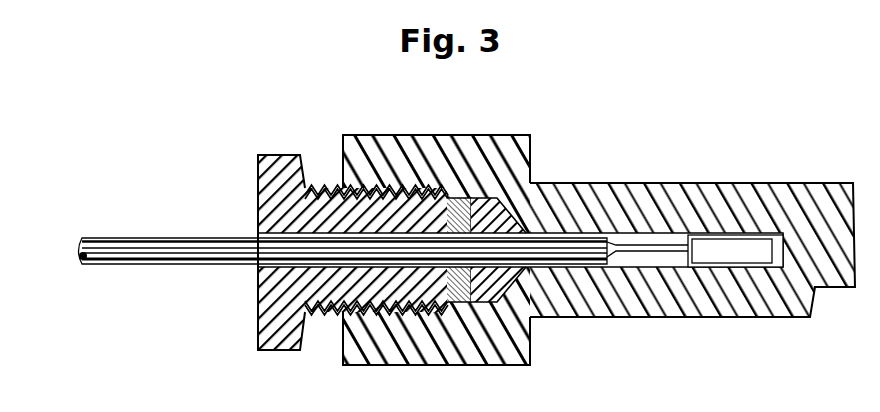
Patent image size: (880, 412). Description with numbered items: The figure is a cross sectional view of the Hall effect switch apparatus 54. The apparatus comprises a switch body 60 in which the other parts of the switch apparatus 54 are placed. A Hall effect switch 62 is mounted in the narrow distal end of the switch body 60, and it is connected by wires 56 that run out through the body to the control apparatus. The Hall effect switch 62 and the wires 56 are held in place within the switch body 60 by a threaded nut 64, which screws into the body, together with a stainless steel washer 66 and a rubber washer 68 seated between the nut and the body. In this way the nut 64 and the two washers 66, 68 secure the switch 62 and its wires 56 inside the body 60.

The Hall effect switch apparatus 54 is at (637, 183).
The wires 56 is at (137, 243).
The switch body 60 is at (673, 310).
The Hall effect switch 62 is at (777, 268).
The threaded nut 64 is at (275, 160).
The stainless steel washer 66 is at (448, 200).
The rubber washer 68 is at (505, 203).